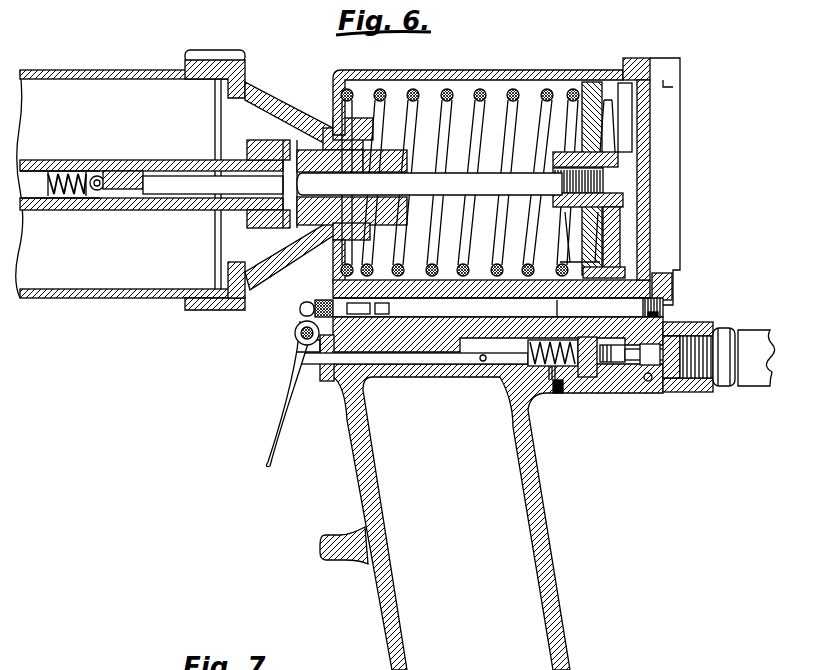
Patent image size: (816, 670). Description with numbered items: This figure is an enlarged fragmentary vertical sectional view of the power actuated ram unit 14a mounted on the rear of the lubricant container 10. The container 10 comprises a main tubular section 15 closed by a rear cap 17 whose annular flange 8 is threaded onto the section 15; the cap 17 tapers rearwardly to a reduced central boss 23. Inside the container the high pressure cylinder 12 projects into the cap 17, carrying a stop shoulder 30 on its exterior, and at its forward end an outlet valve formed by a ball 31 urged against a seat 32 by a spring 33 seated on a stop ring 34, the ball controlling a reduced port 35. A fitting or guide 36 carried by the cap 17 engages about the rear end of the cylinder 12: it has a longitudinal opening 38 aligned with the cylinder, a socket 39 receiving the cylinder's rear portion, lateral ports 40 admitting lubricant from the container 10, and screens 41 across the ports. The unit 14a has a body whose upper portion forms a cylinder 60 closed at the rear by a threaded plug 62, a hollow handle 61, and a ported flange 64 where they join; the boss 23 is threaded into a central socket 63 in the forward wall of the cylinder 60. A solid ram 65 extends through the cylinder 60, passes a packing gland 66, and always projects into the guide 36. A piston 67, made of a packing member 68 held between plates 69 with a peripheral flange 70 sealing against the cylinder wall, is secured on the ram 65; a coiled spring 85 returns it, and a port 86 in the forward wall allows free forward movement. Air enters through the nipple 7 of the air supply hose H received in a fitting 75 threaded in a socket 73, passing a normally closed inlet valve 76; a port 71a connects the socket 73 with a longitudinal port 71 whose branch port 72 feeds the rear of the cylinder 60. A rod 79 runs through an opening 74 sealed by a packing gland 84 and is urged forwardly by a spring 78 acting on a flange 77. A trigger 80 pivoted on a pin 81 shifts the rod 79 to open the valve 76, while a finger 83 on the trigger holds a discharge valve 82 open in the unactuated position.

The nipple or fitting 7 is at (717, 388).
The annular flange 8 is at (211, 52).
The container 10 is at (84, 68).
The high pressure cylinder or ejector cylinder 12 is at (173, 158).
The power actuated ram unit 14a is at (492, 68).
The main tubular section 15 is at (111, 71).
The rear head or cap 17 is at (247, 62).
The central boss 23 is at (327, 126).
The stop shoulder 30 is at (234, 228).
The ball 31 is at (97, 168).
The seat 32 is at (98, 208).
The spring 33 is at (71, 209).
The stop ring 34 is at (58, 168).
The port 35 is at (128, 191).
The fitting or guide 36 is at (256, 146).
The longitudinal opening 38 is at (341, 178).
The socket 39 is at (213, 185).
The lateral ports 40 is at (292, 233).
The strainers or screens 41 is at (289, 134).
The cylinder 60 is at (531, 69).
The handle 61 is at (362, 505).
The threaded cap or plug 62 is at (650, 258).
The central socket 63 is at (332, 250).
The flange 64 is at (455, 365).
The plunger or ram 65 is at (429, 184).
The packing gland 66 is at (398, 177).
The piston 67 is at (579, 83).
The packing member 68 is at (607, 233).
The plates 69 is at (572, 222).
The peripheral flange 70 is at (610, 82).
The longitudinal port 71 is at (627, 312).
The port 71a is at (557, 317).
The branch port 72 is at (655, 288).
The socket 73 is at (648, 382).
The opening 74 is at (483, 361).
The fitting 75 is at (680, 393).
The inlet valve 76 is at (612, 393).
The flange 77 is at (545, 395).
The spring 78 is at (578, 395).
The rod 79 is at (412, 366).
The trigger 80 is at (284, 385).
The pin 81 is at (296, 333).
The discharge valve 82 is at (312, 303).
The finger 83 is at (303, 319).
The packing gland 84 is at (368, 382).
The coiled spring 85 is at (447, 89).
The port 86 is at (337, 103).
The air supply hose H is at (751, 388).